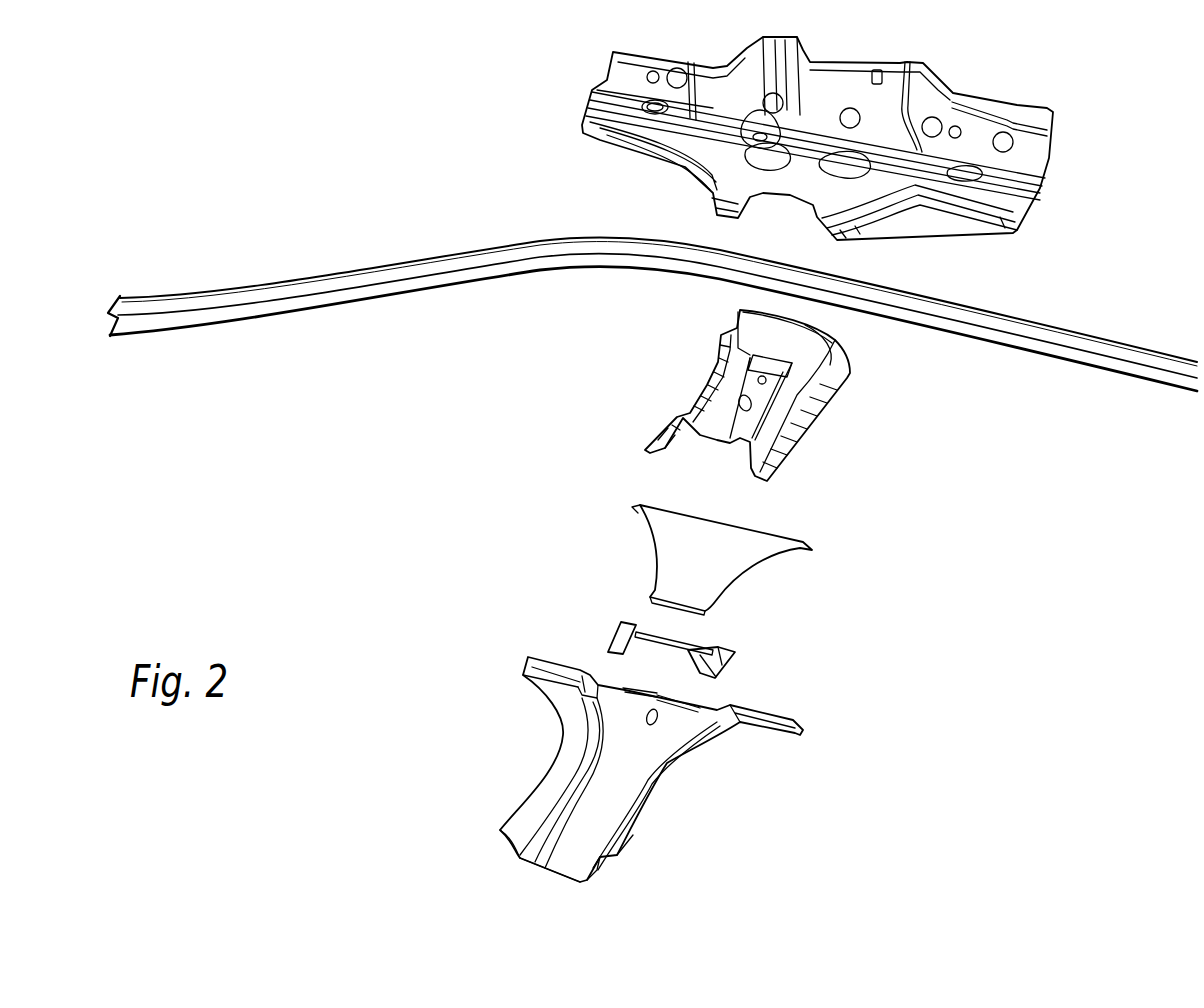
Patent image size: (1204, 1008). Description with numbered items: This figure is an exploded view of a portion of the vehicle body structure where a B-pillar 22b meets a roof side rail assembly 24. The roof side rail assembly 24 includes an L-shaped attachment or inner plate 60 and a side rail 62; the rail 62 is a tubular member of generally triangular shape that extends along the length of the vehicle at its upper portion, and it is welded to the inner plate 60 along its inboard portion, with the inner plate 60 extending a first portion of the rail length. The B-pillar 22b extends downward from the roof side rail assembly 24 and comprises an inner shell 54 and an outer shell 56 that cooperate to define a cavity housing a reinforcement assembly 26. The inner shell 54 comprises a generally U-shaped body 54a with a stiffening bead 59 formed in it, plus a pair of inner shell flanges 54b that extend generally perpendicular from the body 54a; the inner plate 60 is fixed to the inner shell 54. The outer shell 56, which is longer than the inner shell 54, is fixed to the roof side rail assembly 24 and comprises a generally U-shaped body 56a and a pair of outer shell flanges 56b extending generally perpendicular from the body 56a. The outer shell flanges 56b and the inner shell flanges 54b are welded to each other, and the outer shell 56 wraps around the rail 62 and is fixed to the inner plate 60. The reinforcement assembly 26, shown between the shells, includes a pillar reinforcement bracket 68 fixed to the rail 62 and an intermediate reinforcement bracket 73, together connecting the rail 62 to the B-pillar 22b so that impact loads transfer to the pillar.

The roof side rail assembly 24 is at (352, 183).
The side rail 62 is at (523, 241).
The inner plate 60 is at (1057, 158).
The inner shell 54 is at (840, 403).
The body 54a is at (738, 315).
The inner shell flanges 54b is at (667, 453).
The stiffening bead 59 is at (730, 412).
The reinforcement assembly 26 is at (601, 575).
The pillar reinforcement bracket 68 is at (818, 552).
The intermediate reinforcement bracket 73 is at (737, 665).
The B-pillar 22b is at (492, 713).
The outer shell 56 is at (670, 763).
The body 56a is at (557, 852).
The outer shell flanges 56b is at (500, 830).